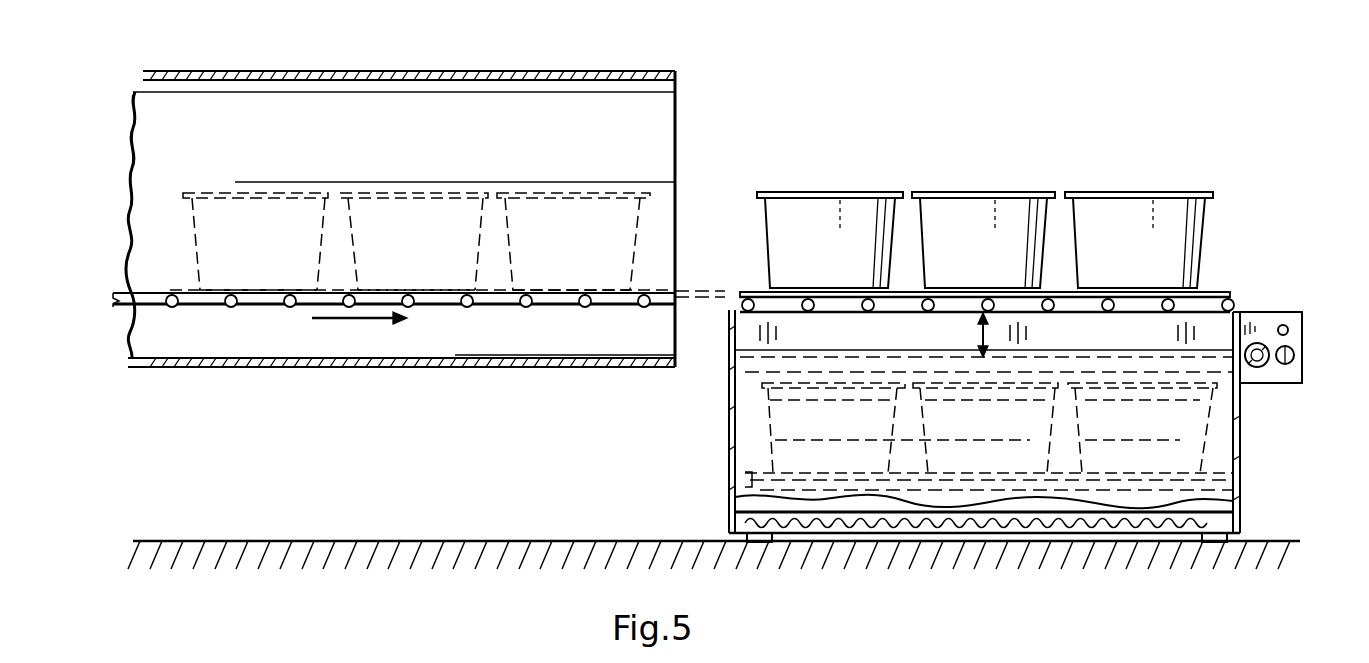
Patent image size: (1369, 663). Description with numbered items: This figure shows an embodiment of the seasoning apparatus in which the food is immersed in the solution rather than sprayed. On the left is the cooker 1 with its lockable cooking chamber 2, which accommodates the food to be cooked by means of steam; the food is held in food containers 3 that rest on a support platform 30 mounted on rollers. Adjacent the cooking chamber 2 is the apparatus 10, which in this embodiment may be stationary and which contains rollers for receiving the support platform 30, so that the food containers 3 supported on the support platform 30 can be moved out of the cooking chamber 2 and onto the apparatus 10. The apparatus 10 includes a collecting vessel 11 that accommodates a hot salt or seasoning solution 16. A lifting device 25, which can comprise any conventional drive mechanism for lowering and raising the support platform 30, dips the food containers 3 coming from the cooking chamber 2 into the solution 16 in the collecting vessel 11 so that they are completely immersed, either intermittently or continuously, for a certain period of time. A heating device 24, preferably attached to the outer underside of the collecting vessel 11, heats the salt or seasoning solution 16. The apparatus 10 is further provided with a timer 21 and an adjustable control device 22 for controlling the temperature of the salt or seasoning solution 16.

The cooker 1 is at (687, 65).
The cooking chamber 2 is at (665, 122).
The food containers 3 is at (242, 208).
The apparatus 10 is at (713, 447).
The collecting vessel 11 is at (730, 458).
The salt or seasoning solution 16 is at (1080, 352).
The timer 21 is at (1257, 367).
The adjustable control device 22 is at (1283, 364).
The heating device 24 is at (1020, 522).
The lifting device 25 is at (1200, 312).
The support platform 30 is at (757, 292).